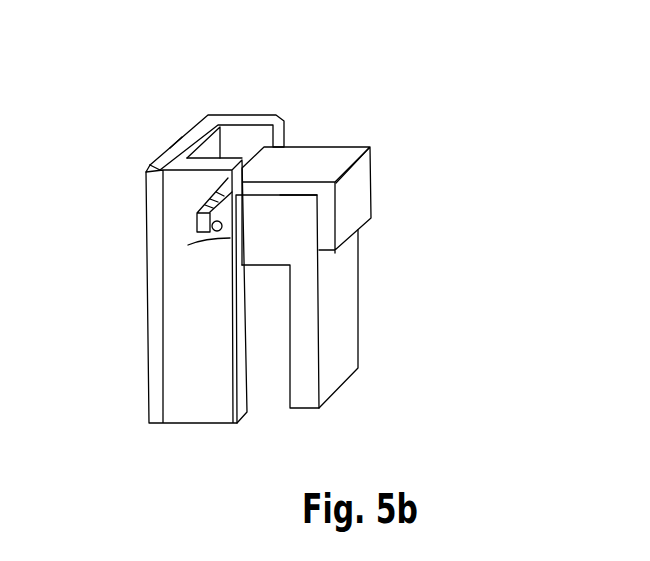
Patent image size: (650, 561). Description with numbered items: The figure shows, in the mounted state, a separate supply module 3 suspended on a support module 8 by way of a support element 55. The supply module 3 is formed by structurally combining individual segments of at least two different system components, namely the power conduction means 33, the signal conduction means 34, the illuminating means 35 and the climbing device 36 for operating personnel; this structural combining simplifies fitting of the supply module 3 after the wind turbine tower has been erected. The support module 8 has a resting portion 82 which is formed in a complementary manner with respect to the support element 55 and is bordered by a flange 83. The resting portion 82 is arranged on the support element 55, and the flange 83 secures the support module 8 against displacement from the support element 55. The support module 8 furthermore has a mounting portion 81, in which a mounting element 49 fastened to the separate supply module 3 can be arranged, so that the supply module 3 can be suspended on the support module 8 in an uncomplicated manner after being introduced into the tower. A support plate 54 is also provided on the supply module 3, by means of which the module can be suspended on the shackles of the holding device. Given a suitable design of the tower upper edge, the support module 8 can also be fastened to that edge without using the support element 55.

The supply module 3 is at (190, 353).
The support module 8 is at (325, 163).
The power conduction means 33 is at (207, 115).
The signal conduction means 34 is at (152, 167).
The illuminating means 35 is at (158, 163).
The climbing device 36 is at (177, 140).
The mounting element 49 is at (210, 228).
The support plate 54 is at (305, 387).
The support element 55 is at (273, 205).
The mounting portion 81 is at (218, 242).
The resting portion 82 is at (297, 200).
The flange 83 is at (355, 192).